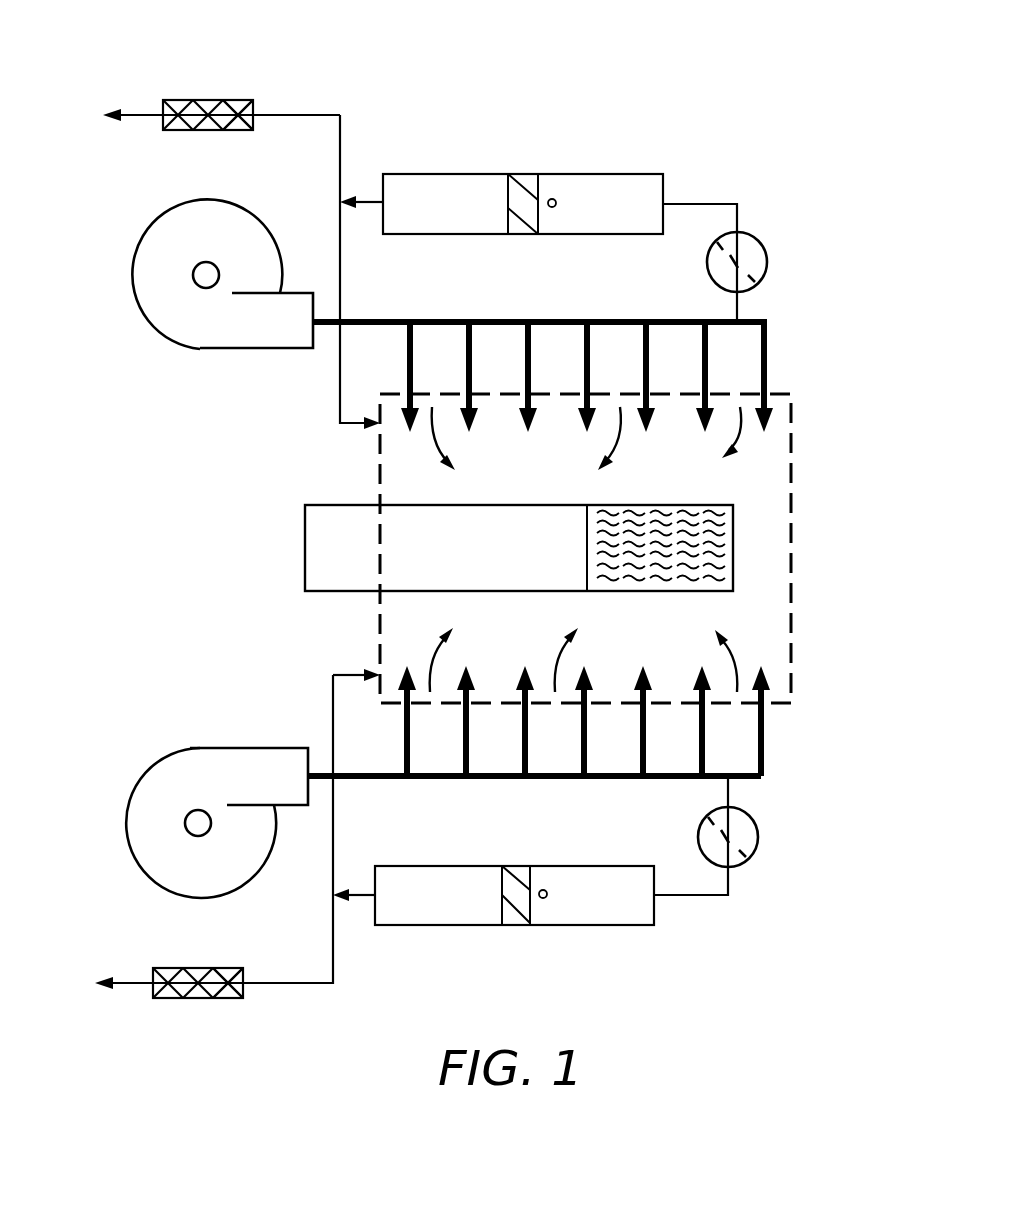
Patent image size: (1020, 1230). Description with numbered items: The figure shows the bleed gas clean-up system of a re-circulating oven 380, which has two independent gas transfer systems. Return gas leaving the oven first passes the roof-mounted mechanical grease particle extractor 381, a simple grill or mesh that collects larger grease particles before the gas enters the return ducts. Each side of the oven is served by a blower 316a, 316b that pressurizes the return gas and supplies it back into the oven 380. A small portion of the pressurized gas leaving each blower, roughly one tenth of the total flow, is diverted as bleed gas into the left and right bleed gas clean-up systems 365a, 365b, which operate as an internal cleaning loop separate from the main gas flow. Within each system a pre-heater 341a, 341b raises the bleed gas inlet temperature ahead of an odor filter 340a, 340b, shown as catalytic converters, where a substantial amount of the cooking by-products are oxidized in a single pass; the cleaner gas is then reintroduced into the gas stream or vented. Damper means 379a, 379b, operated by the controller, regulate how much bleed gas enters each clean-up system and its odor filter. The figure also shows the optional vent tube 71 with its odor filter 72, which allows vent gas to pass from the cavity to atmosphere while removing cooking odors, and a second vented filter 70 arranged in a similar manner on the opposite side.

The exhaust filter 70 is at (200, 99).
The vent tube 71 is at (190, 999).
The odor filter 72 is at (233, 100).
The blower 316a is at (202, 748).
The blower 316b is at (203, 350).
The odor filter 340a is at (517, 917).
The odor filter 340b is at (525, 180).
The pre-heater 341a is at (547, 898).
The pre-heater 341b is at (557, 201).
The bleed gas clean-up system 365a is at (413, 925).
The bleed gas clean-up system 365b is at (420, 173).
The damper means 379a is at (758, 840).
The damper means 379b is at (767, 259).
The re-circulating oven 380 is at (793, 508).
The grease particle extractor 381 is at (737, 553).